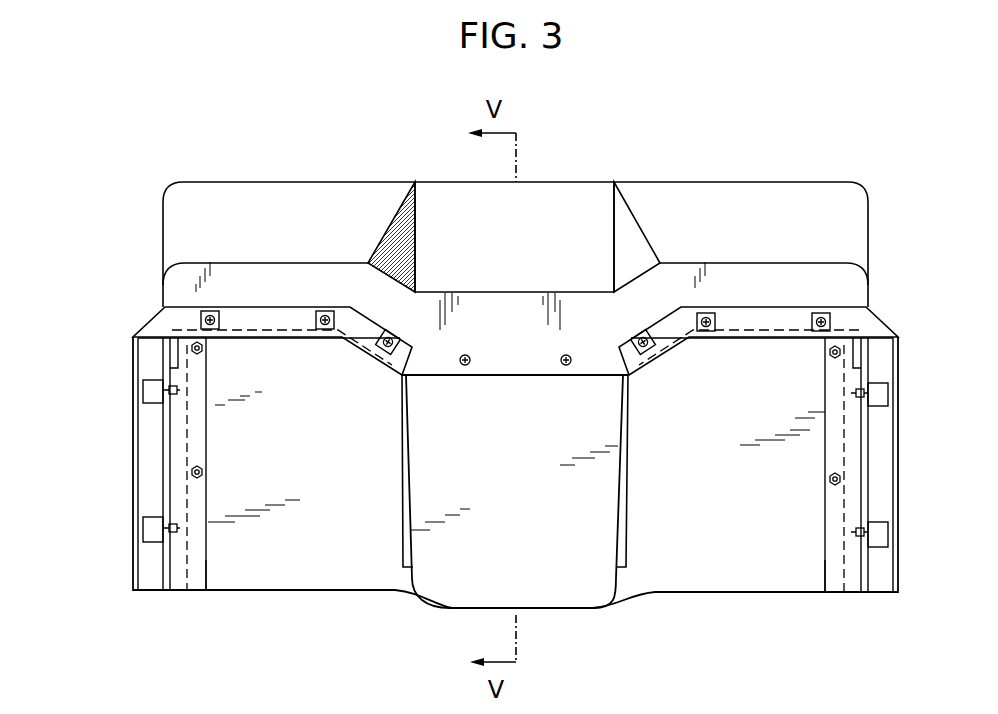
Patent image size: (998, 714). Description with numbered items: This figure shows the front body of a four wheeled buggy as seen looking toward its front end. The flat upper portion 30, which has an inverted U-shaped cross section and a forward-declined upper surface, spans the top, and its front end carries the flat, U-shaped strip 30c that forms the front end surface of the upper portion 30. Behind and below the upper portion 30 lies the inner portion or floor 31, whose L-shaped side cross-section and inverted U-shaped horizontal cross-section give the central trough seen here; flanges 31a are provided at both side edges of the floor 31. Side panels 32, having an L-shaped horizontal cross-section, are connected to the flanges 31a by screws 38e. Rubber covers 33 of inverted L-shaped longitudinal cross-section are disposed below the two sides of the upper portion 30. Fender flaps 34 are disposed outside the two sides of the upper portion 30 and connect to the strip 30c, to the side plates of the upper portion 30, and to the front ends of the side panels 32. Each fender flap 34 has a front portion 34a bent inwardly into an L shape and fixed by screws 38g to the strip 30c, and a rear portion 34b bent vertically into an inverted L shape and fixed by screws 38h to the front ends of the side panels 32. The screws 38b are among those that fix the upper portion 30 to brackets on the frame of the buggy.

The upper portion 30 is at (515, 226).
The strip 30c is at (542, 306).
The inner portion or floor 31 is at (500, 504).
The flanges 31a is at (198, 580).
The side panels 32 is at (175, 574).
The rubber covers 33 is at (402, 540).
The fender flaps 34 is at (520, 492).
The front portion 34a is at (515, 330).
The rear portion 34b is at (886, 510).
The screws 38b is at (465, 366).
The screws 38e is at (828, 479).
The screws 38g is at (328, 329).
The screws 38h is at (856, 531).